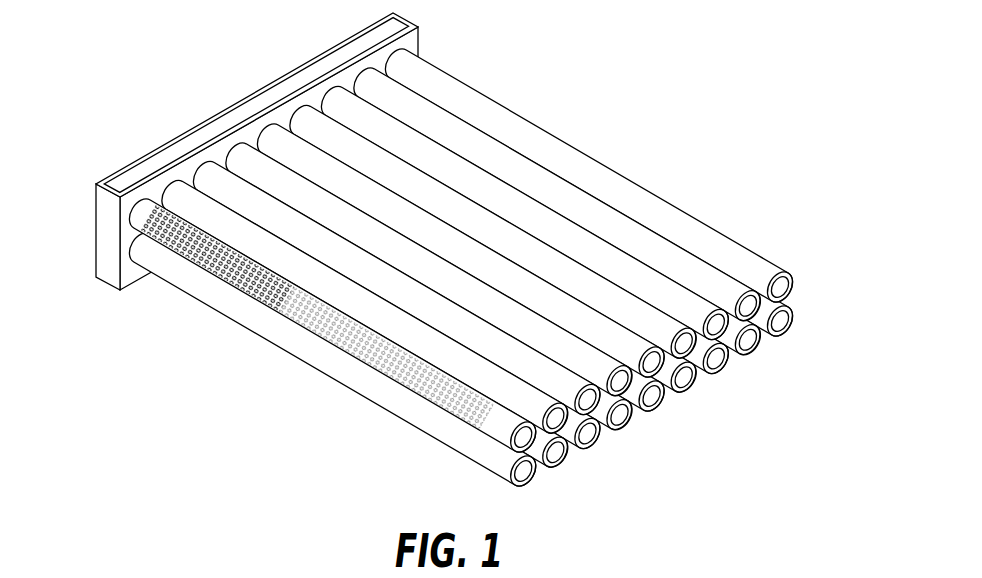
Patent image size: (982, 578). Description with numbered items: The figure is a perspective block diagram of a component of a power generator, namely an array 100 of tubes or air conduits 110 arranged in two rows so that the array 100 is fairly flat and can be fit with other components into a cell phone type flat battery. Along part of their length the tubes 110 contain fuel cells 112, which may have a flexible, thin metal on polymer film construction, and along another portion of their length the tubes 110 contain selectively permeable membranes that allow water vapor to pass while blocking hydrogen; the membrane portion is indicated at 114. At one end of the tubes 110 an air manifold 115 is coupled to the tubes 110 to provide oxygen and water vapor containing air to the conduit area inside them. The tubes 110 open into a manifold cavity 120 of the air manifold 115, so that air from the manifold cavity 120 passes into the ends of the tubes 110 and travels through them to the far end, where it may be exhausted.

The array 100 is at (417, 252).
The tubes 110 is at (463, 270).
The fuel cells 112 is at (192, 259).
The second perforated mesh section 114 is at (348, 354).
The air manifold 115 is at (95, 228).
The manifold cavity 120 is at (227, 151).